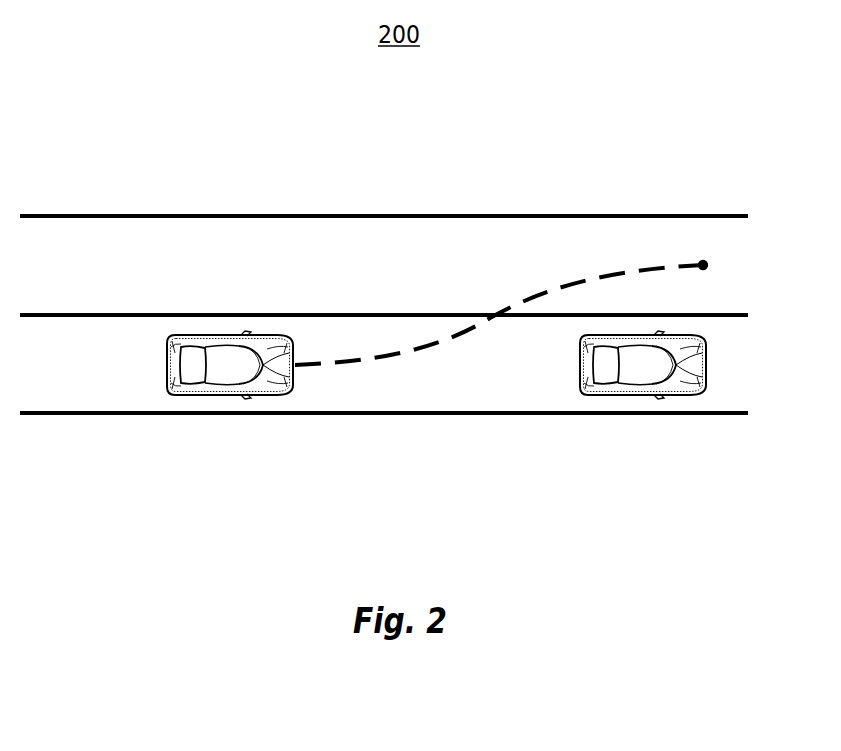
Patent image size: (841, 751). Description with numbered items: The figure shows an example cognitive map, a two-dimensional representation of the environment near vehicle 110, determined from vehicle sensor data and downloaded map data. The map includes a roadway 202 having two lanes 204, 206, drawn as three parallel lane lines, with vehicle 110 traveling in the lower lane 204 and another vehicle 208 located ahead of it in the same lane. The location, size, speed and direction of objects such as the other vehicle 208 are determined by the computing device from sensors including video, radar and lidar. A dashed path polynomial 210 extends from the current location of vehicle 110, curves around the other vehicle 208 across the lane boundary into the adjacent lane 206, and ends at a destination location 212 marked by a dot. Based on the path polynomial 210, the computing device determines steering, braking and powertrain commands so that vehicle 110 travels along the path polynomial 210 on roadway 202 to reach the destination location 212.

The roadway 202 is at (200, 188).
The lane 204 is at (72, 376).
The lane 206 is at (72, 278).
The vehicle 110 is at (228, 388).
The another vehicle 208 is at (638, 387).
The path polynomial 210 is at (480, 326).
The destination location 212 is at (703, 265).